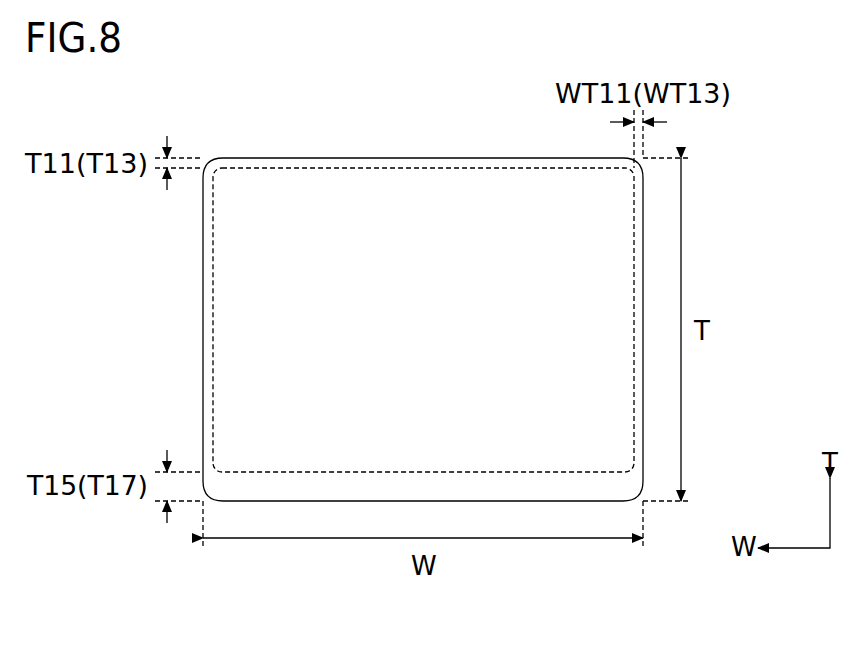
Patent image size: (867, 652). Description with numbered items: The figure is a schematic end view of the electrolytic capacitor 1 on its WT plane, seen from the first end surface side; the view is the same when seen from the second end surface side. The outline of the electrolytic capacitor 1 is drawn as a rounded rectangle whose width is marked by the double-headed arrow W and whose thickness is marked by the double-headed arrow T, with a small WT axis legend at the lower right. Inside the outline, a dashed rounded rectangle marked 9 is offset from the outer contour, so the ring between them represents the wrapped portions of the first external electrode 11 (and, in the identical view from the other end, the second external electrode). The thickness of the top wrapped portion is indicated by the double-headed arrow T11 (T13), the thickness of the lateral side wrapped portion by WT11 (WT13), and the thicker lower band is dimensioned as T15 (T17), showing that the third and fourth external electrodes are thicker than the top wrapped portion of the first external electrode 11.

The electrolytic capacitor 1 is at (357, 283).
The core / inner member 9 is at (478, 164).
The first external electrode 11 is at (357, 329).